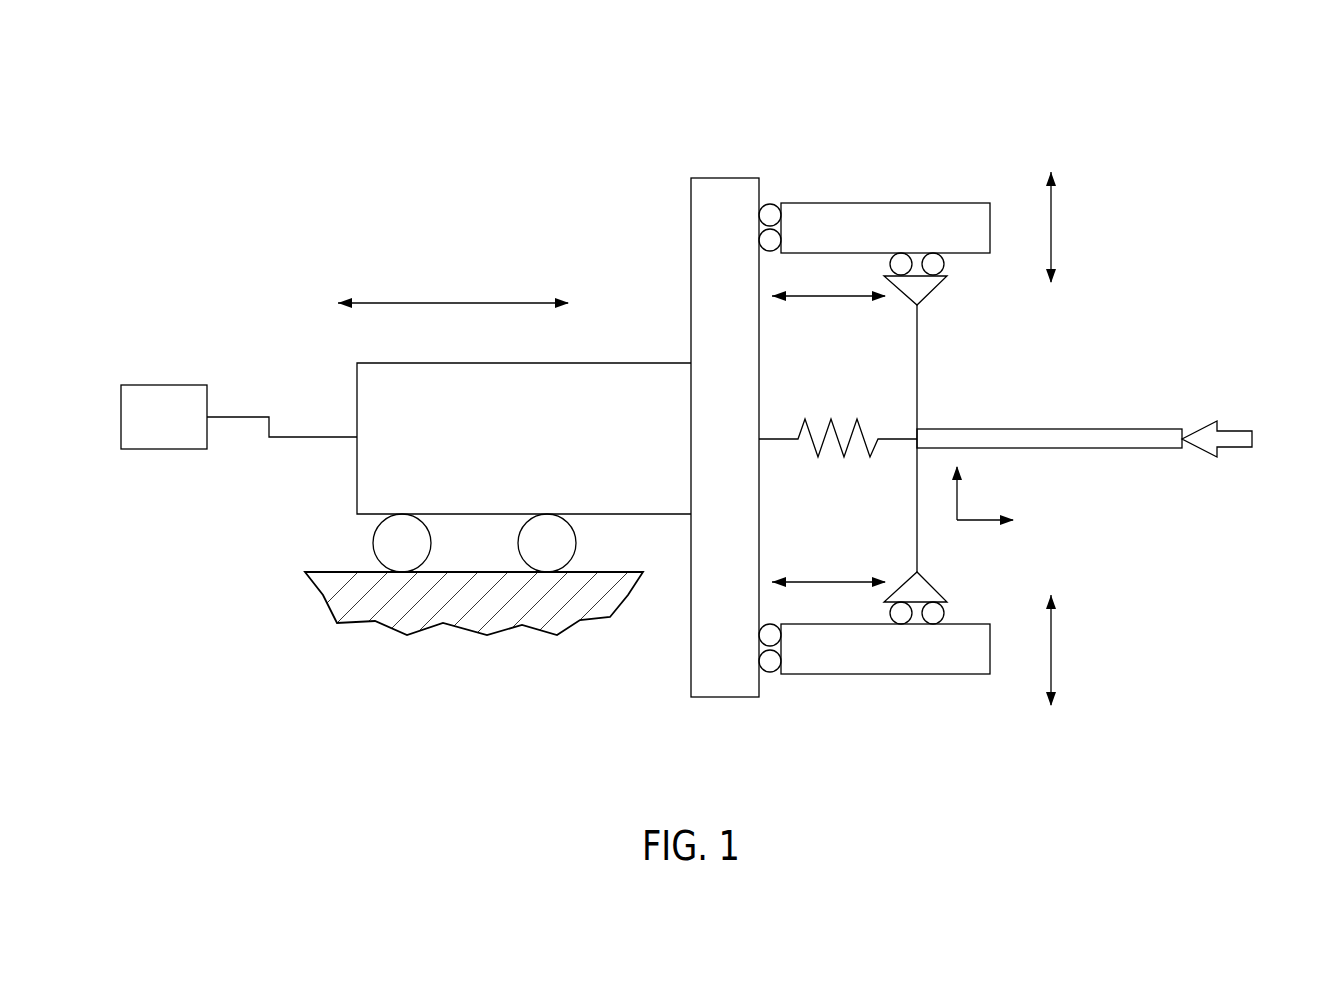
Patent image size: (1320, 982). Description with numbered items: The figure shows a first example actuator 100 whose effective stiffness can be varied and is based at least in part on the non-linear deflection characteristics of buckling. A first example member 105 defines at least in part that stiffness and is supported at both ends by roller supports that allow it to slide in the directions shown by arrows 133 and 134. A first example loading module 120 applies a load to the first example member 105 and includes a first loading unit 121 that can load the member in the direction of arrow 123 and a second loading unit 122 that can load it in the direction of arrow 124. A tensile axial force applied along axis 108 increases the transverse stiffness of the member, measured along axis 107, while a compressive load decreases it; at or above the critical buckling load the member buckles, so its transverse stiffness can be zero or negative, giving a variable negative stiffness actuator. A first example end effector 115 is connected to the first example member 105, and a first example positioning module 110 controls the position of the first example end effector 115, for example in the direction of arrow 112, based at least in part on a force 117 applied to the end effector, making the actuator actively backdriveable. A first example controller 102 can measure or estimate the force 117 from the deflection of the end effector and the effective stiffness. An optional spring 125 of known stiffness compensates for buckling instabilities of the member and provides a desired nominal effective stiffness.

The first example actuator 100 is at (781, 98).
The first example controller 102 is at (142, 429).
The first example member 105 is at (917, 358).
The axis 107 is at (980, 520).
The axis 108 is at (957, 498).
The first example positioning module 110 is at (505, 450).
The arrow 112 is at (445, 303).
The first example end effector 115 is at (1040, 437).
The force 117 is at (1232, 448).
The first example loading module 120 is at (969, 737).
The first loading unit 121 is at (864, 663).
The second loading unit 122 is at (864, 241).
The arrow 123 is at (1051, 648).
The arrow 124 is at (1051, 225).
The optional spring 125 is at (838, 488).
The arrow 133 is at (853, 582).
The arrow 134 is at (823, 296).